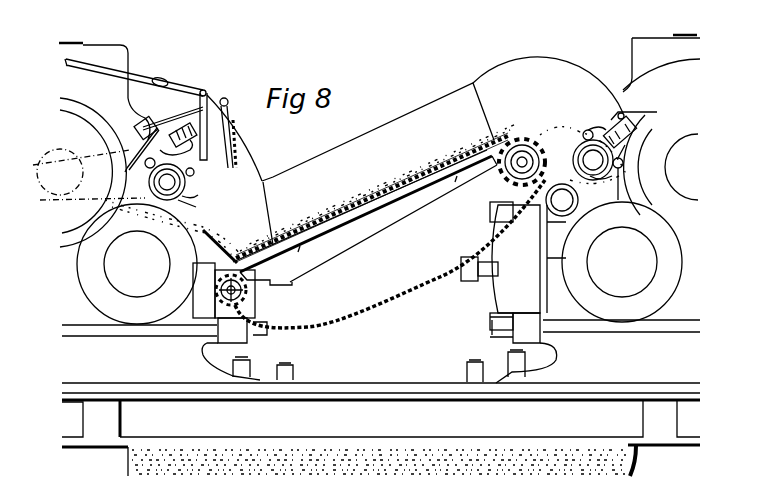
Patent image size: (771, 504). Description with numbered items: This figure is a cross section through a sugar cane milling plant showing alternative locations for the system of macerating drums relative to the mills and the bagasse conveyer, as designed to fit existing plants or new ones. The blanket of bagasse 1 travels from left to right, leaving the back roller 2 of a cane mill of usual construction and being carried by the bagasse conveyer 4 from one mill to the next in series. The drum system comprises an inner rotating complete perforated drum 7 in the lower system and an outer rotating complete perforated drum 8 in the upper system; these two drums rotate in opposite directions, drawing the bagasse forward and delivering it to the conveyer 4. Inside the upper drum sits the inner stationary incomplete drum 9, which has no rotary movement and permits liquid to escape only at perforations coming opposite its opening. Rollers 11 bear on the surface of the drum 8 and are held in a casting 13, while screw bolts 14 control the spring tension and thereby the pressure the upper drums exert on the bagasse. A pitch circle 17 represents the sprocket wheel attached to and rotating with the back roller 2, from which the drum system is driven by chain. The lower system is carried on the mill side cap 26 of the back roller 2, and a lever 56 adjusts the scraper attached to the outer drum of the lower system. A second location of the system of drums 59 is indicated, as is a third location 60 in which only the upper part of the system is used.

The blanket of bagasse 1 is at (213, 249).
The back roller 2 is at (137, 264).
The bagasse conveyer 4 is at (307, 327).
The inner rotating complete perforated drum 7 is at (562, 200).
The outer rotating complete perforated drum 8 is at (622, 173).
The inner stationary incomplete drum 9 is at (381, 170).
The rollers 11 is at (194, 173).
The casting 13 is at (601, 108).
The screw bolts 14 is at (190, 138).
The pitch circle of sprocket wheel 17 is at (50, 186).
The mill side cap 26 is at (247, 290).
The lever 56 is at (200, 99).
The second location of the system of drums 59 is at (571, 150).
The third location of the system of drums 60 is at (196, 207).